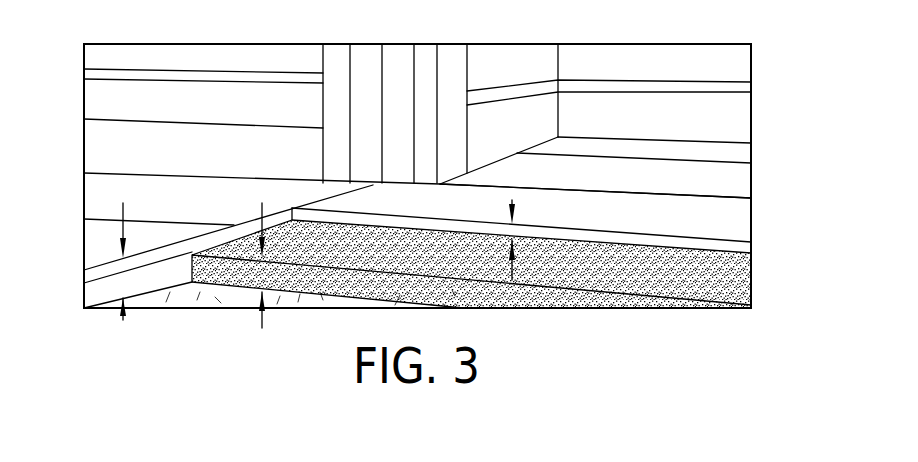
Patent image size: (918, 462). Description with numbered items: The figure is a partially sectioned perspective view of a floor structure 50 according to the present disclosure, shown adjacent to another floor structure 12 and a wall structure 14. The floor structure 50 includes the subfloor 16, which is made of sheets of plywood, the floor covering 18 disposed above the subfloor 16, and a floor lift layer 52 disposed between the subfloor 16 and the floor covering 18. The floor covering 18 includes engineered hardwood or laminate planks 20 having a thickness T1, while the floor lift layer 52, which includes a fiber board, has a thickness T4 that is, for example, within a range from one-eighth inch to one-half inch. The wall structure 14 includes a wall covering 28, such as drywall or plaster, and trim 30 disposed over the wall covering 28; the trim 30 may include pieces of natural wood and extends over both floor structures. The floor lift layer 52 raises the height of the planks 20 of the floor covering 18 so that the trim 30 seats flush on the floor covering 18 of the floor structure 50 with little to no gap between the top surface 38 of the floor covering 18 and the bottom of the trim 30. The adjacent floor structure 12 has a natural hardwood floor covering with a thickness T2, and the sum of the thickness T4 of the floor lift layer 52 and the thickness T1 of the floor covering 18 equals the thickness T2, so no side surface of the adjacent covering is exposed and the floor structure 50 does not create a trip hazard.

The floor structure 12 is at (122, 133).
The wall structure 14 is at (738, 124).
The subfloor 16 is at (220, 300).
The floor covering 18 is at (665, 257).
The planks 20 is at (742, 153).
The wall covering 28 is at (697, 63).
The trim 30 is at (597, 105).
The top surface 38 is at (620, 183).
The floor structure 50 is at (664, 157).
The floor lift layer 52 is at (385, 248).
The thickness T1 is at (512, 200).
The thickness T2 is at (123, 203).
The thickness T4 is at (262, 203).